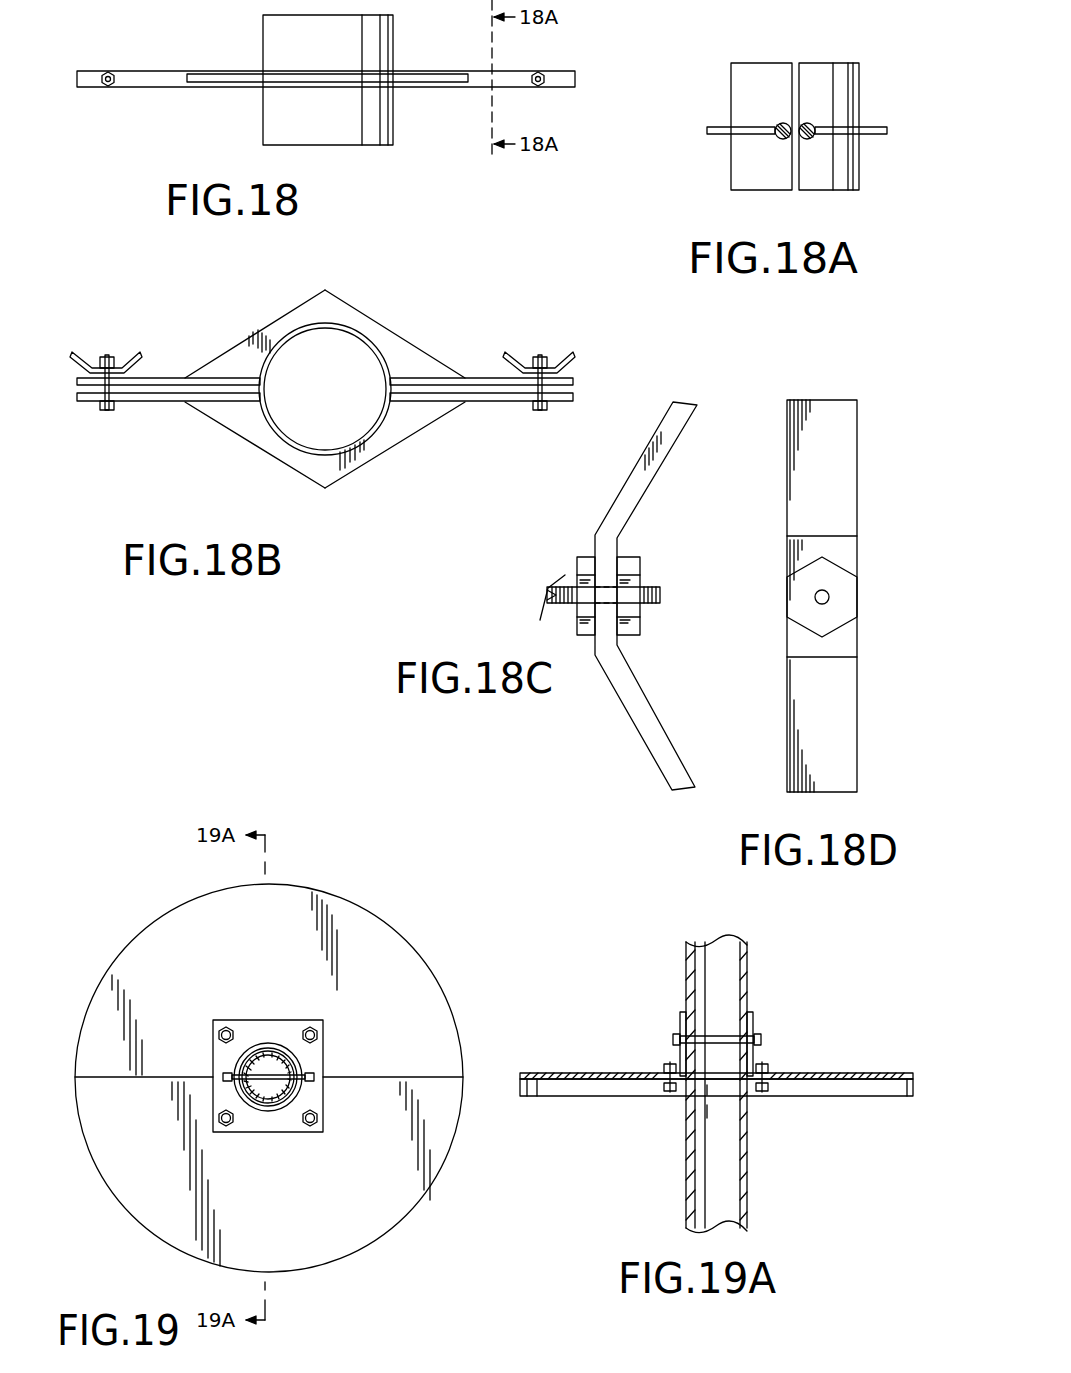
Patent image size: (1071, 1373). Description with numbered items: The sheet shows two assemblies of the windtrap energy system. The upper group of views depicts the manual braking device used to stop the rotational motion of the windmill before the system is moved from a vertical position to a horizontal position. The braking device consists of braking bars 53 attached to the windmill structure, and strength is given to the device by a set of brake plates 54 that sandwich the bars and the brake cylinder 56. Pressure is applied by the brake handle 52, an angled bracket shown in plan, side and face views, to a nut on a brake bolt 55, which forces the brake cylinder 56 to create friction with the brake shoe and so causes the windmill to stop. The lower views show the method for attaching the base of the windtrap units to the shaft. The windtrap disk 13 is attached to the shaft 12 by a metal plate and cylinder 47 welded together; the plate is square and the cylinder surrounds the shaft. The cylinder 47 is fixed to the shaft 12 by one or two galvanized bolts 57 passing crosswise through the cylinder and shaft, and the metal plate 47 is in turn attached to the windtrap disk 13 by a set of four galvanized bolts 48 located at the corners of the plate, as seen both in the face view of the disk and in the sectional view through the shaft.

In FIG. 19, the shaft 12 is at (284, 1104).
In FIG. 19A, the shaft 12 is at (749, 1148).
In FIG. 19, the windtrap disk 13 is at (374, 1019).
In FIG. 19A, the windtrap disk 13 is at (852, 1074).
In FIG. 19, the metal plate and cylinder 47 is at (250, 1046).
In FIG. 19A, the metal plate and cylinder 47 is at (754, 1020).
In FIG. 19, the galvanized bolts 48 is at (319, 1021).
In FIG. 18B, the brake handle 52 is at (77, 355).
In FIG. 18C, the brake handle 52 is at (643, 705).
In FIG. 18D, the brake handle 52 is at (850, 690).
In FIG. 18, the bar 53 is at (564, 84).
In FIG. 18A, the bar 53 is at (806, 120).
In FIG. 18B, the bar 53 is at (165, 378).
In FIG. 18, the brake plates 54 is at (223, 78).
In FIG. 18A, the brake plates 54 is at (722, 128).
In FIG. 18B, the brake plates 54 is at (363, 323).
In FIG. 18, the brake bolt 55 is at (111, 86).
In FIG. 18B, the brake bolt 55 is at (107, 355).
In FIG. 18C, the brake bolt 55 is at (658, 588).
In FIG. 18D, the brake bolt 55 is at (830, 598).
In FIG. 18, the block 56 is at (375, 113).
In FIG. 18A, the block 56 is at (740, 172).
In FIG. 18B, the block 56 is at (282, 443).
In FIG. 19, the galvanized bolts 57 is at (266, 1071).
In FIG. 19A, the galvanized bolts 57 is at (720, 1037).